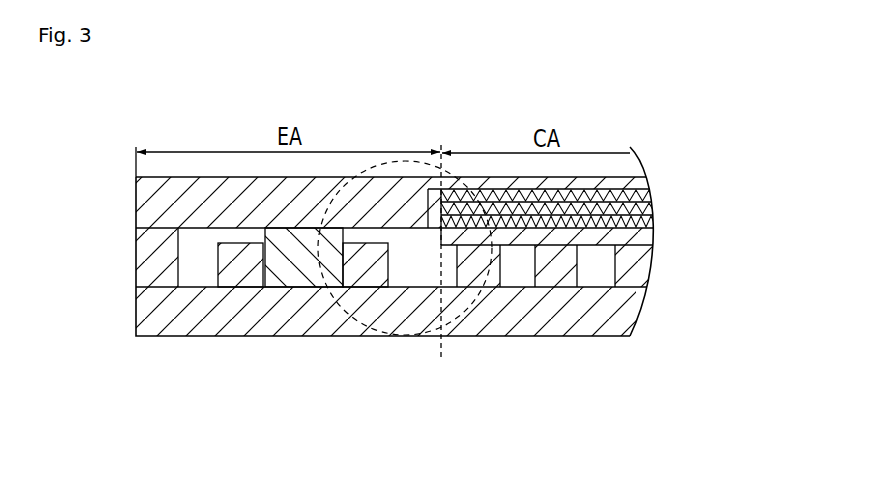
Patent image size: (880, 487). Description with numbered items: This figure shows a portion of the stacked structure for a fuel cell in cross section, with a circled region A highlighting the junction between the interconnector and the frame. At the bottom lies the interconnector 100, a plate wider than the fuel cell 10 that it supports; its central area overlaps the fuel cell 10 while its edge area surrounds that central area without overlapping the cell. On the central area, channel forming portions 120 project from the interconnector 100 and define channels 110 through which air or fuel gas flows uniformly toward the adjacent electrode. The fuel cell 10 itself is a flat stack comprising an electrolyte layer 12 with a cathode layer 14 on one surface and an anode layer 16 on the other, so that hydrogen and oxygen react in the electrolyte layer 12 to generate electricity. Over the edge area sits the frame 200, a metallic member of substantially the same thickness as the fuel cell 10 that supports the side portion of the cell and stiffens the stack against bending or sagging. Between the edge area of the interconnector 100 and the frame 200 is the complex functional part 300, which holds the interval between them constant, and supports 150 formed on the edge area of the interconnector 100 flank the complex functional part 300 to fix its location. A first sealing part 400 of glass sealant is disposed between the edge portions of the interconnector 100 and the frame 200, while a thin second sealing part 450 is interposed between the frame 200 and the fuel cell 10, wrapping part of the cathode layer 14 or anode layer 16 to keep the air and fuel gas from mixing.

The fuel cell 10 is at (588, 243).
The electrolyte layer 12 is at (648, 226).
The cathode layer 14 is at (604, 195).
The anode layer 16 is at (596, 328).
The interconnector 100 is at (154, 320).
The channel 110 is at (506, 272).
The channel forming portion 120 is at (557, 272).
The support 150 is at (236, 270).
The frame 200 is at (210, 192).
The complex functional part 300 is at (297, 268).
The first sealing part 400 is at (148, 253).
The second sealing part 450 is at (479, 192).
The region A is at (408, 335).